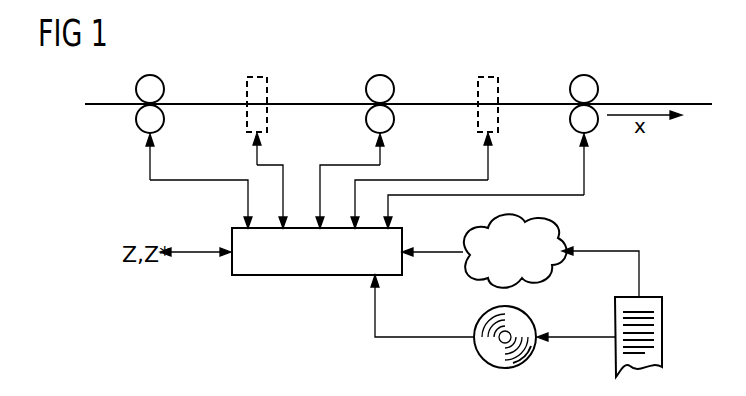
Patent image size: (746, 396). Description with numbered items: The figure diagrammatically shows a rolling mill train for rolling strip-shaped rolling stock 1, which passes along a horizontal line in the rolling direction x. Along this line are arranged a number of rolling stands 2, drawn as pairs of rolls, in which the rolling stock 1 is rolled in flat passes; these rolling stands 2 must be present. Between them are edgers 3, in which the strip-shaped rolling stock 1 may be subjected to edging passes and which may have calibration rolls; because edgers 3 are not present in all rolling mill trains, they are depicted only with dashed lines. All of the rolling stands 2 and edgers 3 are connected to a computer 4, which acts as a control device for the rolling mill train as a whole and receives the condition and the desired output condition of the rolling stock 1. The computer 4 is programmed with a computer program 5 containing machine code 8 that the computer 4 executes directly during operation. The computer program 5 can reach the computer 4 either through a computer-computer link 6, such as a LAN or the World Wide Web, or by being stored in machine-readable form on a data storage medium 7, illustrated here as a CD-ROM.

The rolling stock 1 is at (428, 102).
The rolling stands 2 is at (150, 75).
The edgers 3 is at (257, 77).
The computer 4 is at (318, 277).
The computer program 5 is at (634, 332).
The computer-computer link 6 is at (506, 263).
The data storage medium 7 is at (476, 350).
The machine code 8 is at (668, 308).